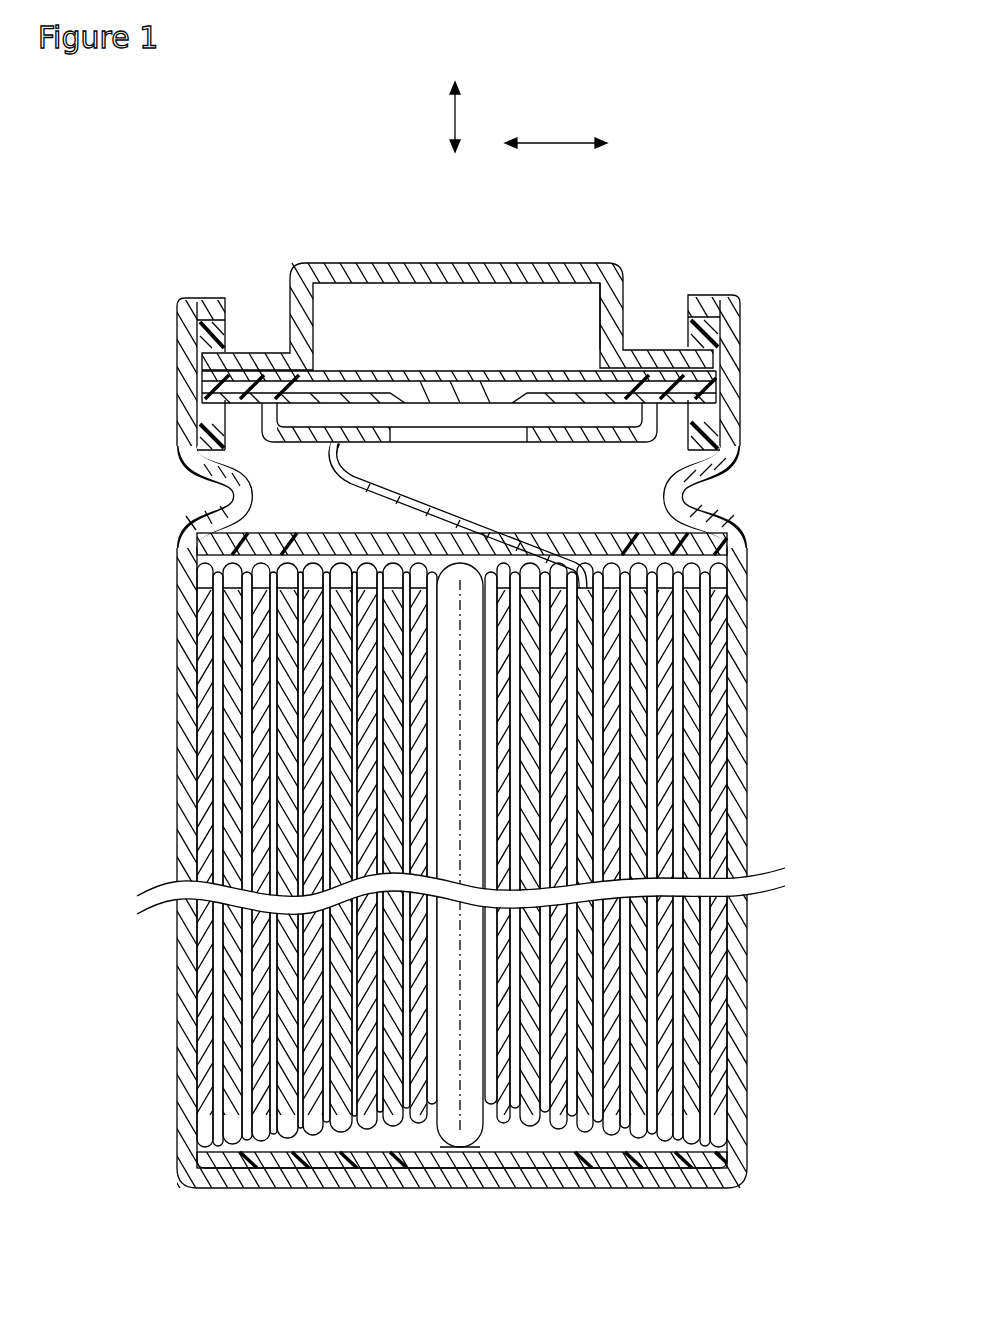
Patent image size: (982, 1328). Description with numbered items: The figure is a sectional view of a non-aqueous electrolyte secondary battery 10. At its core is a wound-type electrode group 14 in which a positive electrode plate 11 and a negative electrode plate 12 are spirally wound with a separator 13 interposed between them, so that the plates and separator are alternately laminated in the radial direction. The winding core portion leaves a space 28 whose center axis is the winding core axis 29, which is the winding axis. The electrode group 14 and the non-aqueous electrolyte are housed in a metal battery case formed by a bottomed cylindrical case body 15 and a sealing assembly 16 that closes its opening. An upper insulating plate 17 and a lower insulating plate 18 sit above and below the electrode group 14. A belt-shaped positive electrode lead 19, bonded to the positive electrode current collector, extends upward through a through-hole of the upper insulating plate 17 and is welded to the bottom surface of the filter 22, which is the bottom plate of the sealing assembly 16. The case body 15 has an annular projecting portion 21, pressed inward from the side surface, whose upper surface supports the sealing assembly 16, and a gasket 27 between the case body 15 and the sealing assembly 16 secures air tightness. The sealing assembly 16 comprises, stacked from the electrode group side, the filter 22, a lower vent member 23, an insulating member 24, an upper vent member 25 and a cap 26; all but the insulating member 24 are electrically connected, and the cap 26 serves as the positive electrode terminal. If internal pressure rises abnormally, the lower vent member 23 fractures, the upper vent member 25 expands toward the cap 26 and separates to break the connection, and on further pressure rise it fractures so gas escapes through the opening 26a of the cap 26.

The non-aqueous electrolyte secondary battery 10 is at (697, 190).
The positive electrode plate 11 is at (705, 818).
The negative electrode plate 12 is at (697, 848).
The separator 13 is at (700, 925).
The electrode group 14 is at (830, 795).
The case body 15 is at (741, 323).
The sealing assembly 16 is at (450, 262).
The upper insulating plate 17 is at (735, 490).
The lower insulating plate 18 is at (717, 1142).
The positive electrode lead 19 is at (228, 478).
The projecting portion 21 is at (663, 495).
The filter 22 is at (572, 441).
The lower vent member 23 is at (352, 388).
The insulating member 24 is at (268, 350).
The upper vent member 25 is at (537, 368).
The cap 26 is at (530, 263).
The opening 26a is at (627, 310).
The gasket 27 is at (707, 294).
The space 28 is at (452, 1122).
The winding core axis 29 is at (480, 1160).